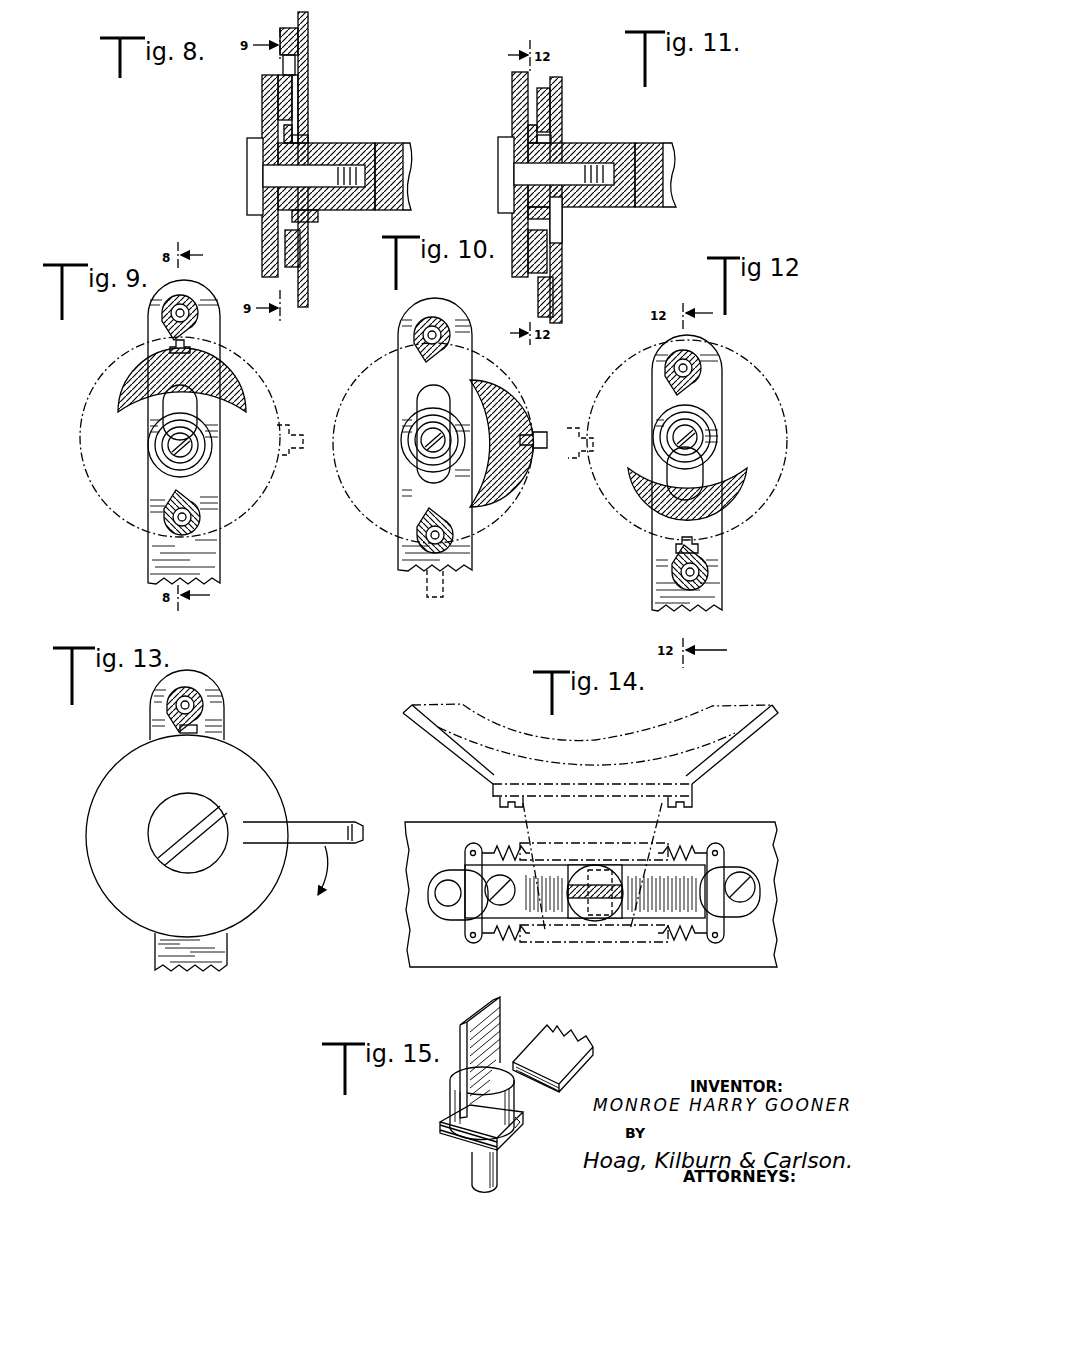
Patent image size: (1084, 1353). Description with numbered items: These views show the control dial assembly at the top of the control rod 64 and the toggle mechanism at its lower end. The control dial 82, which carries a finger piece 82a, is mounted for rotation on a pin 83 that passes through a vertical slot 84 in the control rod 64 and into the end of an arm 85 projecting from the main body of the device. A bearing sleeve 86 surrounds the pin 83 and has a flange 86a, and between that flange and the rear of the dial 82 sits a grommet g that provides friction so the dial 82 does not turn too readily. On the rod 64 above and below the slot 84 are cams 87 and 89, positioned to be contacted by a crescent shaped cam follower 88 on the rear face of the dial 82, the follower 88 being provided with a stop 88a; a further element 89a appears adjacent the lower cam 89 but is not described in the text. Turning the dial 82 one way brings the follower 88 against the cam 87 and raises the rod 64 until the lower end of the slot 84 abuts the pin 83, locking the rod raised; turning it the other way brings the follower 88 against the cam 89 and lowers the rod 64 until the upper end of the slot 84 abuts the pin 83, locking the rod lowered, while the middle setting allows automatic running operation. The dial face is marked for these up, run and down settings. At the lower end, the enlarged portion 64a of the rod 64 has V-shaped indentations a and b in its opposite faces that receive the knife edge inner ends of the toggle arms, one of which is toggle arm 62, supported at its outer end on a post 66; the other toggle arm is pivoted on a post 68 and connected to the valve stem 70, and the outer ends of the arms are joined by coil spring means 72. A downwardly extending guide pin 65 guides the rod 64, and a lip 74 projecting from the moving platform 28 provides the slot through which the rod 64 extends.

In FIG. 14, the moving platform 28 is at (748, 735).
In FIG. 15, the toggle arm 62 is at (568, 1045).
In FIG. 8, the control rod 64 is at (309, 300).
In FIG. 11, the control rod 64 is at (560, 78).
In FIG. 9, the control rod 64 is at (221, 500).
In FIG. 10, the control rod 64 is at (473, 556).
In FIG. 12, the control rod 64 is at (687, 473).
In FIG. 13, the control rod 64 is at (213, 681).
In FIG. 14, the control rod 64 is at (584, 884).
In FIG. 15, the control rod 64 is at (497, 1030).
In FIG. 14, the enlarged lower end of control rod 64a is at (612, 870).
In FIG. 15, the enlarged lower end of control rod 64a is at (517, 1132).
In FIG. 15, the guide pin 65 is at (492, 1175).
In FIG. 14, the post 66 is at (752, 891).
In FIG. 14, the post 68 is at (494, 898).
In FIG. 14, the valve stem 70 is at (443, 896).
In FIG. 14, the coil spring means 72 is at (686, 842).
In FIG. 14, the lip 74 is at (653, 886).
In FIG. 8, the control dial 82 is at (262, 120).
In FIG. 11, the control dial 82 is at (512, 100).
In FIG. 9, the control dial 82 is at (88, 486).
In FIG. 10, the control dial 82 is at (345, 518).
In FIG. 12, the control dial 82 is at (752, 527).
In FIG. 13, the control dial 82 is at (272, 776).
In FIG. 9, the finger piece 82a is at (300, 434).
In FIG. 10, the finger piece 82a is at (580, 458).
In FIG. 13, the finger piece 82a is at (351, 822).
In FIG. 8, the pin 83 is at (276, 180).
In FIG. 11, the pin 83 is at (530, 175).
In FIG. 9, the pin 83 is at (168, 445).
In FIG. 10, the pin 83 is at (430, 452).
In FIG. 12, the pin 83 is at (696, 437).
In FIG. 8, the vertical slot 84 is at (300, 105).
In FIG. 9, the vertical slot 84 is at (200, 396).
In FIG. 10, the vertical slot 84 is at (425, 402).
In FIG. 12, the vertical slot 84 is at (670, 472).
In FIG. 8, the arm 85 is at (386, 145).
In FIG. 11, the arm 85 is at (658, 146).
In FIG. 8, the bearing sleeve 86 is at (323, 206).
In FIG. 11, the bearing sleeve 86 is at (588, 205).
In FIG. 8, the flange 86a is at (302, 140).
In FIG. 11, the flange 86a is at (548, 140).
In FIG. 9, the flange 86a is at (211, 441).
In FIG. 10, the flange 86a is at (415, 452).
In FIG. 12, the flange 86a is at (702, 420).
In FIG. 8, the cam 87 is at (290, 30).
In FIG. 11, the cam 87 is at (545, 95).
In FIG. 9, the cam 87 is at (192, 305).
In FIG. 10, the cam 87 is at (440, 325).
In FIG. 12, the cam 87 is at (690, 356).
In FIG. 13, the cam 87 is at (170, 714).
In FIG. 8, the crescent shaped cam follower 88 is at (286, 92).
In FIG. 11, the crescent shaped cam follower 88 is at (540, 250).
In FIG. 9, the crescent shaped cam follower 88 is at (136, 376).
In FIG. 10, the crescent shaped cam follower 88 is at (510, 405).
In FIG. 12, the crescent shaped cam follower 88 is at (735, 490).
In FIG. 8, the stop 88a is at (289, 66).
In FIG. 9, the stop 88a is at (189, 346).
In FIG. 10, the stop 88a is at (540, 433).
In FIG. 12, the stop 88a is at (680, 546).
In FIG. 13, the stop 88a is at (198, 730).
In FIG. 8, the cam 89 is at (300, 262).
In FIG. 11, the cam 89 is at (553, 295).
In FIG. 9, the cam 89 is at (172, 514).
In FIG. 10, the cam 89 is at (425, 530).
In FIG. 12, the cam 89 is at (703, 573).
In FIG. 10, the stop 89a is at (427, 586).
In FIG. 8, the grommet g is at (290, 130).
In FIG. 11, the grommet g is at (540, 132).
In FIG. 9, the grommet g is at (200, 455).
In FIG. 10, the grommet g is at (412, 441).
In FIG. 12, the grommet g is at (708, 446).
In FIG. 14, the V-shaped indentation a is at (552, 935).
In FIG. 15, the V-shaped indentation a is at (457, 1142).
In FIG. 14, the V-shaped indentation b is at (628, 937).
In FIG. 15, the V-shaped indentation b is at (523, 1126).